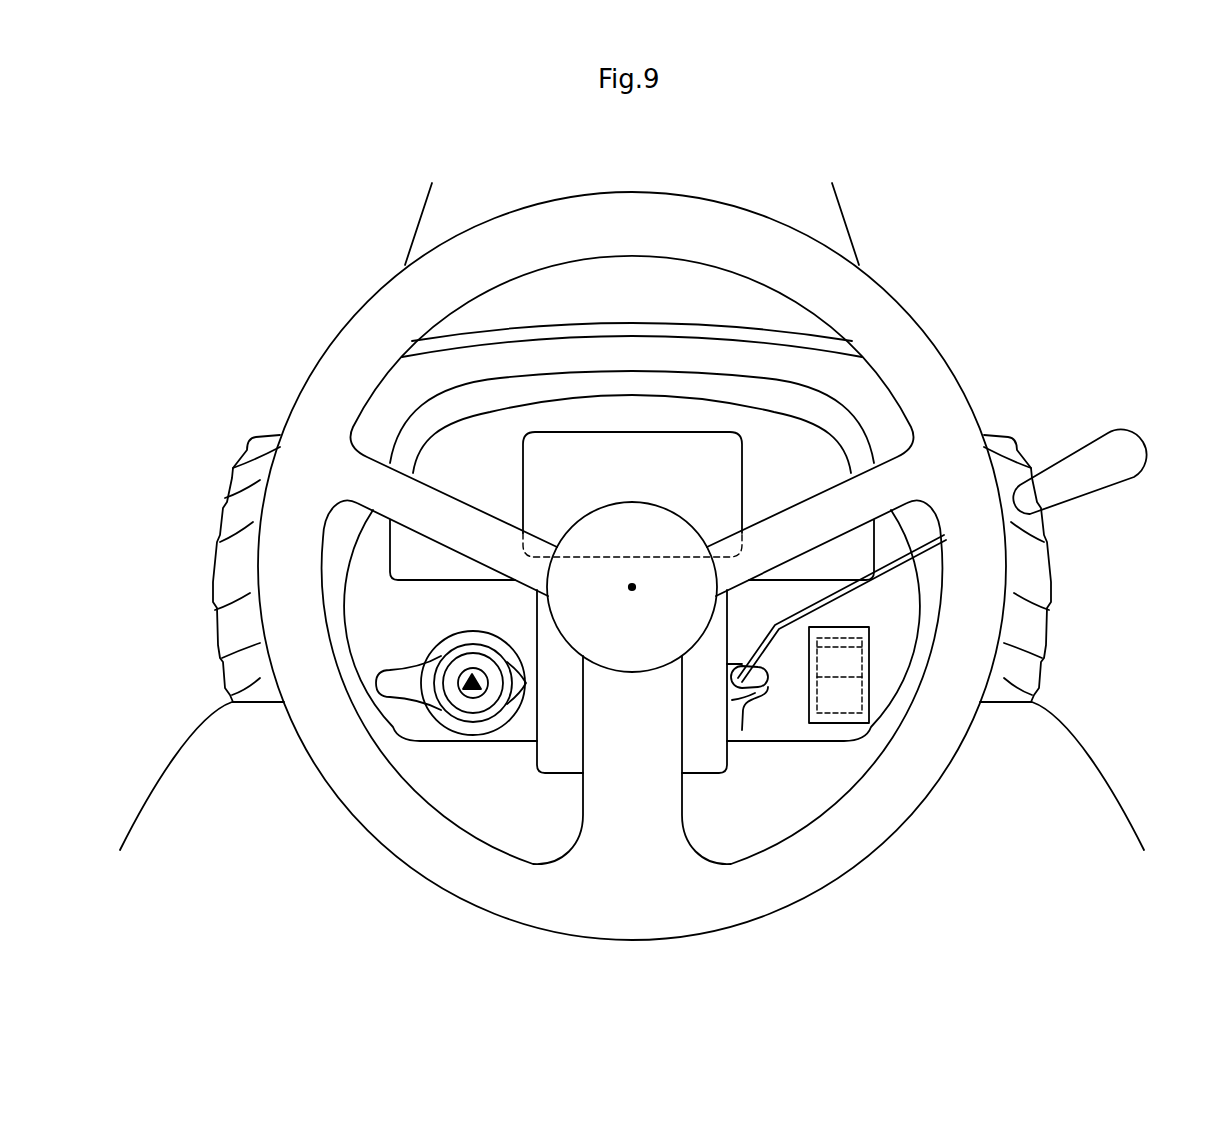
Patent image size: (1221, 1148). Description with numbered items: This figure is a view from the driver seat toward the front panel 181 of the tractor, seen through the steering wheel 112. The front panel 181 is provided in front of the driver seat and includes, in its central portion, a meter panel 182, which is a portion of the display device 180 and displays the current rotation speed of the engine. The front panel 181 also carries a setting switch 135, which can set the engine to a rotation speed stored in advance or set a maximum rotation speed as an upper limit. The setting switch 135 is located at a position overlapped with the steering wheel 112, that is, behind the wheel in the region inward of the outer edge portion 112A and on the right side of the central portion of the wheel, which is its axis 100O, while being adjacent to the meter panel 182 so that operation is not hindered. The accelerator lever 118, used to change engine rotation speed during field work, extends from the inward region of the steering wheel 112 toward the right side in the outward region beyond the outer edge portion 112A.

The steering wheel 112 is at (574, 566).
The outer edge portion 112A is at (303, 387).
The accelerator lever 118 is at (1123, 453).
The front panel 181 is at (830, 373).
The meter panel 182 is at (644, 455).
The display device 180 is at (632, 416).
The axis 100O is at (628, 590).
The setting switch 135 is at (847, 693).